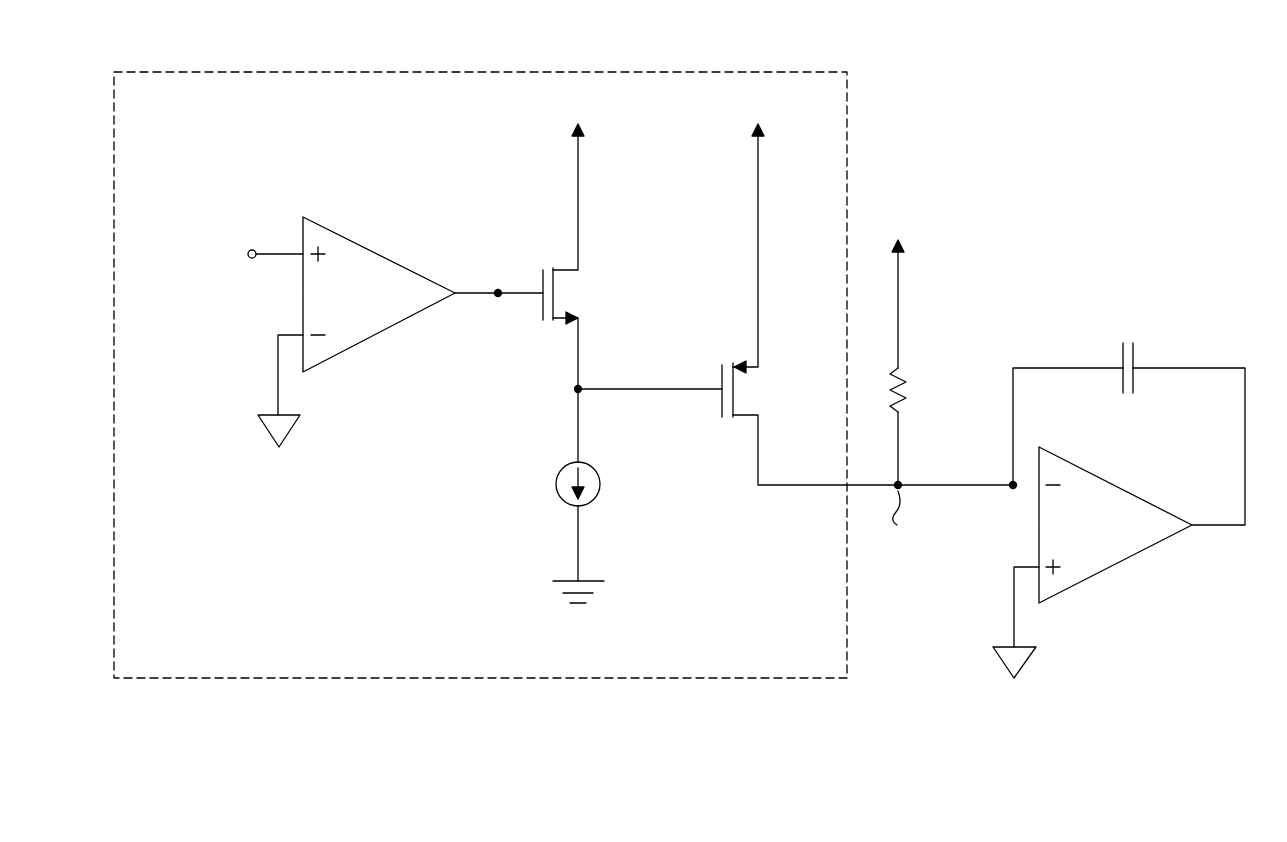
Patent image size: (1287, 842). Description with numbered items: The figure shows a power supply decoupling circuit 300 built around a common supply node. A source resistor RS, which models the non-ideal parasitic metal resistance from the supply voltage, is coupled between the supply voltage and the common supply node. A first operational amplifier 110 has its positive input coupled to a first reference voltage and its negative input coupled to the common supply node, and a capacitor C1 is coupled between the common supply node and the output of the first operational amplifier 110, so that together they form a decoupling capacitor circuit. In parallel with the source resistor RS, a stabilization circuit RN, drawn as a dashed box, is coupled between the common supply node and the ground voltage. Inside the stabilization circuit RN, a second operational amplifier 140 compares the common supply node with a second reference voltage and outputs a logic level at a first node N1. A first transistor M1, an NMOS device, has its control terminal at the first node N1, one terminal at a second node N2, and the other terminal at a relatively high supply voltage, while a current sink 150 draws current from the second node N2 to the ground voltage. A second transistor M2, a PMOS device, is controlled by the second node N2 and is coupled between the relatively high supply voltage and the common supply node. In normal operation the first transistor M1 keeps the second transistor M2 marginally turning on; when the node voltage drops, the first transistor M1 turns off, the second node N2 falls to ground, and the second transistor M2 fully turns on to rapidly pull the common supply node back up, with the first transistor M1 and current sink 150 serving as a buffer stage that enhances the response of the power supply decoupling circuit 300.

The power supply decoupling circuit 300 is at (1062, 45).
The first operational amplifier 110 is at (1113, 485).
The second operational amplifier 140 is at (384, 253).
The current sink 150 is at (601, 484).
The stabilization circuit RN is at (481, 72).
The first transistor M1 is at (573, 293).
The second transistor M2 is at (750, 392).
The source resistor RS is at (905, 392).
The capacitor C1 is at (1130, 342).
The first node N1 is at (498, 299).
The second node N2 is at (573, 390).